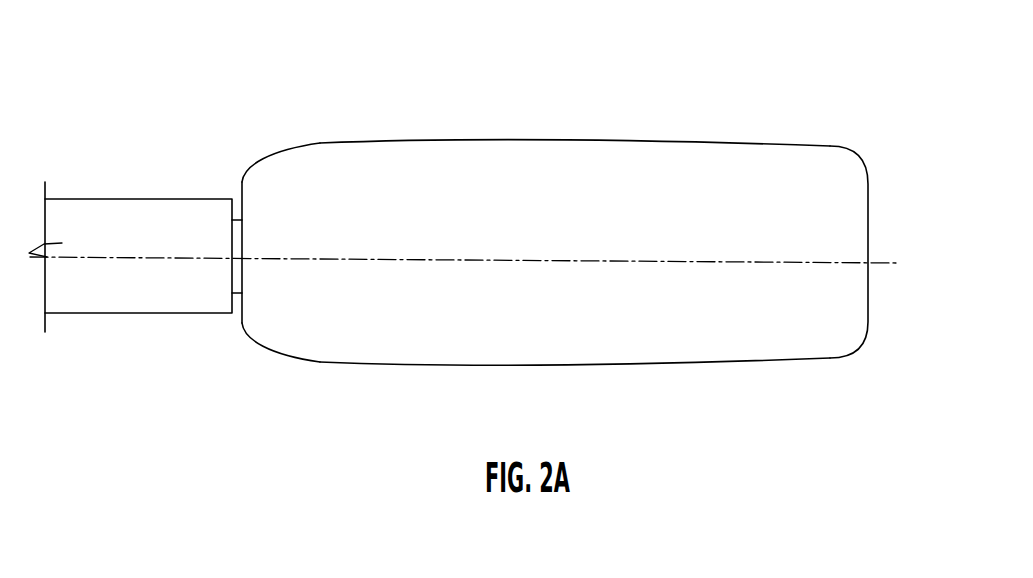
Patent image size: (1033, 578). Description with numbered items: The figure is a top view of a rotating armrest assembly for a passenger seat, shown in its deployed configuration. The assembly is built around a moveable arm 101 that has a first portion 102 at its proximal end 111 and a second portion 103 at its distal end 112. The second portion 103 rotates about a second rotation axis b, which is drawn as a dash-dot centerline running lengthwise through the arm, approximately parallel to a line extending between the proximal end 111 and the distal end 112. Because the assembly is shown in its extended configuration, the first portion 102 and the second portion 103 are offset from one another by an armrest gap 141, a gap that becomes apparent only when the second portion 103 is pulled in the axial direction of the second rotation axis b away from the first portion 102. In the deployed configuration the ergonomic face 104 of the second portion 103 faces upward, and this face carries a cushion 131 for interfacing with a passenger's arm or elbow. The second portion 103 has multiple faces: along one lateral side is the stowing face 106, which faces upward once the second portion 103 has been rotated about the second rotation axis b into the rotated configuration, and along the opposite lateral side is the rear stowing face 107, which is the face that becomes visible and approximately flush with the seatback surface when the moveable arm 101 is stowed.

The moveable arm 101 is at (575, 235).
The first portion 102 is at (130, 259).
The proximal end 111 is at (140, 218).
The armrest gap 141 is at (236, 214).
The rear stowing face 107 is at (407, 140).
The stowing face 106 is at (350, 365).
The cushion 131 is at (680, 207).
The second portion 103 is at (680, 303).
The distal end 112 is at (834, 290).
The ergonomic face 104 is at (363, 297).
The second rotation axis b is at (112, 258).